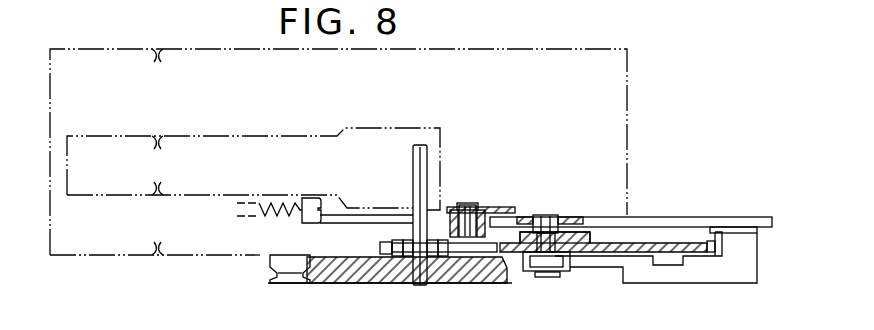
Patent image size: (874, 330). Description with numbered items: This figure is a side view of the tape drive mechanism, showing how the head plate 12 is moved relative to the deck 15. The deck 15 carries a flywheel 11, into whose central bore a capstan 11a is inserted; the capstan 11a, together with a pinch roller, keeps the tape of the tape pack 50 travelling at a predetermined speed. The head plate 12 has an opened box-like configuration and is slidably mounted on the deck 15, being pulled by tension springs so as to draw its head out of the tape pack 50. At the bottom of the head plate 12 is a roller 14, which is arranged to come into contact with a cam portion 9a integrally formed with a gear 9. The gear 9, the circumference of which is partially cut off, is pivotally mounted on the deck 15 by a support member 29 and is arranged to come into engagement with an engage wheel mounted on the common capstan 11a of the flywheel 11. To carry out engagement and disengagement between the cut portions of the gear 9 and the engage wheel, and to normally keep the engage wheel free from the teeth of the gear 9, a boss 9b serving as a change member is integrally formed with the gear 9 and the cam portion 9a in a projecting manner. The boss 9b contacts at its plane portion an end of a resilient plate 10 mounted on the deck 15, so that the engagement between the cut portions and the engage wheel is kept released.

The gear 9 is at (600, 242).
The cam portion 9a is at (580, 230).
The boss 9b is at (558, 276).
The resilient plate 10 is at (723, 272).
The flywheel 11 is at (366, 274).
The capstan 11a is at (427, 151).
The head plate 12 is at (497, 199).
The roller 14 is at (450, 222).
The deck 15 is at (668, 226).
The support member 29 is at (538, 216).
The tape pack 50 is at (407, 130).